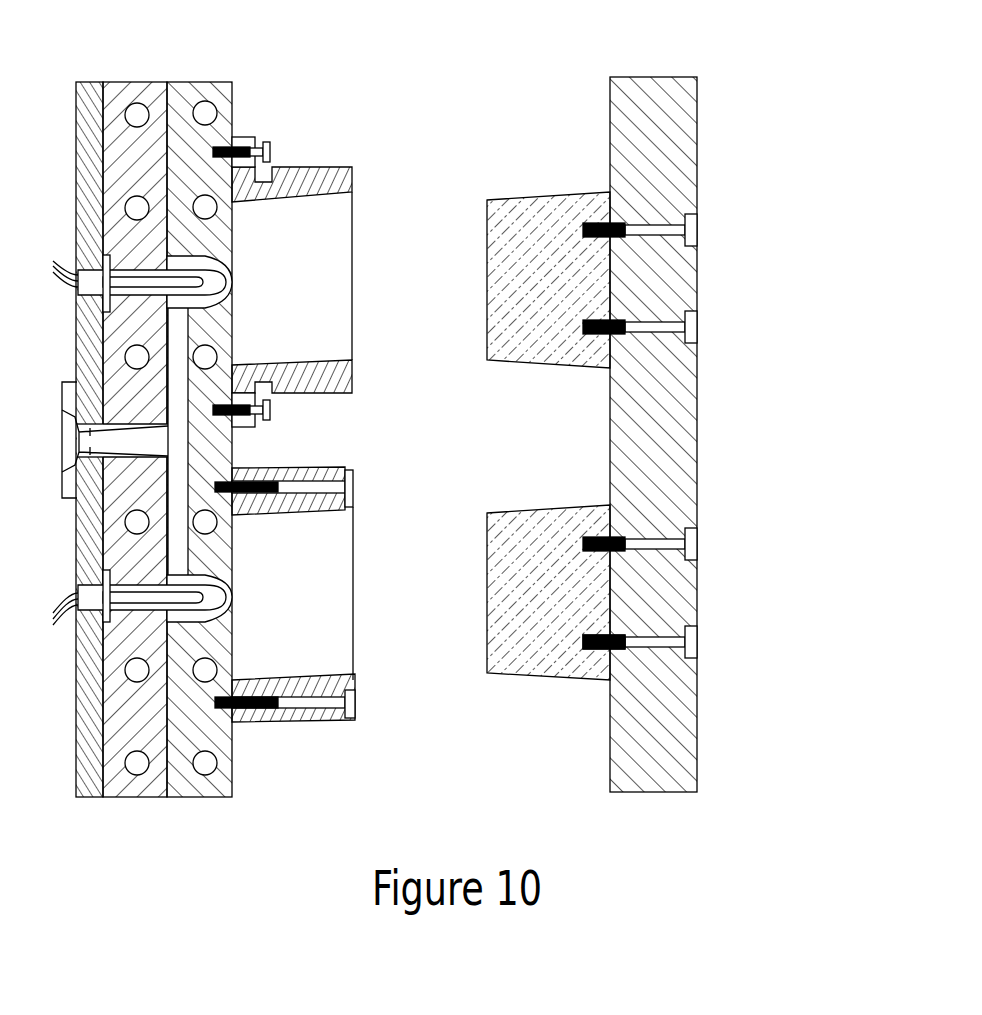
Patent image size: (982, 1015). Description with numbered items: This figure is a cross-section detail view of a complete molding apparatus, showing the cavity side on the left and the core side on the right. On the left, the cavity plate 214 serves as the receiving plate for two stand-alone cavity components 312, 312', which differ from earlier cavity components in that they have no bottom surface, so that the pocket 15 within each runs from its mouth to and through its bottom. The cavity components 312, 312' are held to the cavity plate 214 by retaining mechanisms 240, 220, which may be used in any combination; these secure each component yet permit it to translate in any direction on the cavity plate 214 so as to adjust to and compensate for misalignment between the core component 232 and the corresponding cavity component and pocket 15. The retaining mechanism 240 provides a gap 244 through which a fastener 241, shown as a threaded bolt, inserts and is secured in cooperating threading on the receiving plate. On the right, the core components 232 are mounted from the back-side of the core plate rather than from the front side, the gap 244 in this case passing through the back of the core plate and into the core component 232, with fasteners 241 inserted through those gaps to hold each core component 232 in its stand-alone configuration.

The cavity plate 214 is at (193, 78).
The retaining mechanism 220 is at (272, 137).
The stand-alone cavity component 312 is at (353, 250).
The stand-alone cavity component 312' is at (353, 529).
The core component 232 is at (541, 192).
The retaining mechanism 240 is at (358, 482).
The fastener 241 is at (700, 234).
The gap 244 is at (620, 629).
The pocket 15 is at (293, 441).